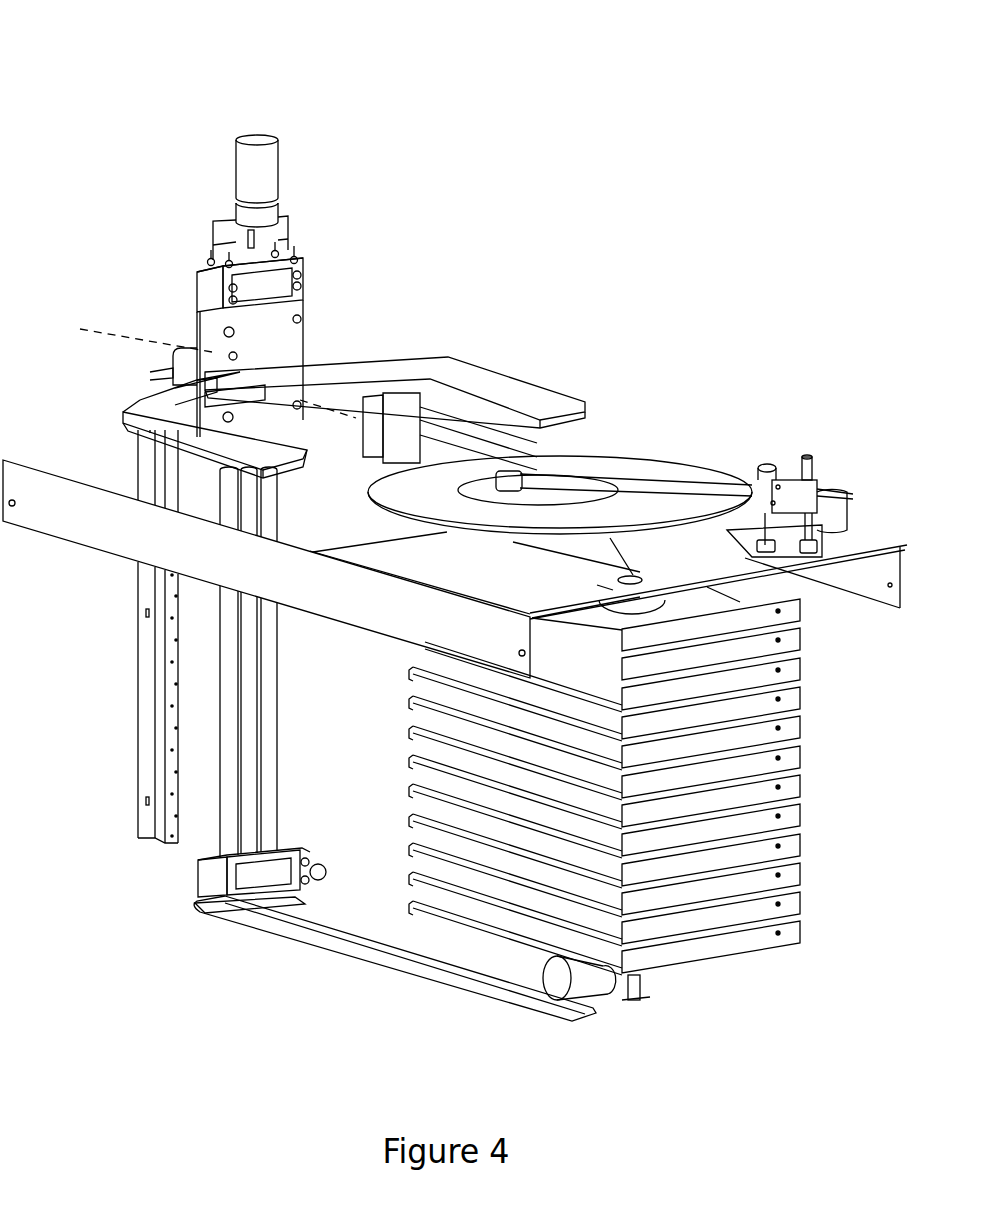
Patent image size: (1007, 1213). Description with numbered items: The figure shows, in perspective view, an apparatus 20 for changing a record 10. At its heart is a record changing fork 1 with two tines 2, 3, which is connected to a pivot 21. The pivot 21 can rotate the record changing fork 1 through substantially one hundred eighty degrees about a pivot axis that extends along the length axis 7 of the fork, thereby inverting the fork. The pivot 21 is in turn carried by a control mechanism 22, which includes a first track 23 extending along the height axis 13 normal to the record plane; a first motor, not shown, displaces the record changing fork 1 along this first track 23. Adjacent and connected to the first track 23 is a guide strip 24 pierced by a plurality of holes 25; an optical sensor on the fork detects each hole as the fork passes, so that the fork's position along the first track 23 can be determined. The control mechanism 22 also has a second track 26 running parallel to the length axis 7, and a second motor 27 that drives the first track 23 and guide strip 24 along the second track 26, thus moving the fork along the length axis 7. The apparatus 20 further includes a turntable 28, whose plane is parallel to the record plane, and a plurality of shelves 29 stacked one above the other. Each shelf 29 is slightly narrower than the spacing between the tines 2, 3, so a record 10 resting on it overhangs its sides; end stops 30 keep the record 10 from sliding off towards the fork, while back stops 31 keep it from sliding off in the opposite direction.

The record changing fork 1 is at (410, 316).
The tine 2 is at (123, 414).
The tine 3 is at (520, 388).
The length axis 7 is at (204, 365).
The record 10 is at (640, 466).
The height axis 13 is at (257, 78).
The apparatus 20 is at (124, 85).
The pivot 21 is at (170, 371).
The control mechanism 22 is at (94, 727).
The first track 23 is at (275, 738).
The guide strip 24 is at (162, 640).
The holes 25 is at (170, 825).
The second track 26 is at (440, 985).
The second motor 27 is at (588, 975).
The turntable 28 is at (565, 545).
The shelves 29 is at (790, 672).
The end stops 30 is at (425, 785).
The back stops 31 is at (790, 847).